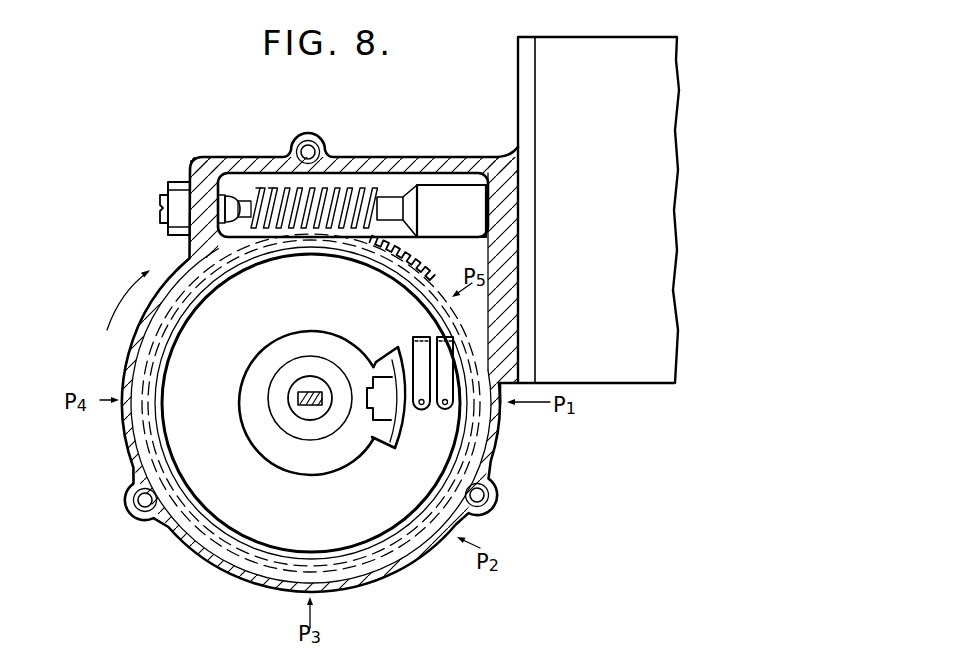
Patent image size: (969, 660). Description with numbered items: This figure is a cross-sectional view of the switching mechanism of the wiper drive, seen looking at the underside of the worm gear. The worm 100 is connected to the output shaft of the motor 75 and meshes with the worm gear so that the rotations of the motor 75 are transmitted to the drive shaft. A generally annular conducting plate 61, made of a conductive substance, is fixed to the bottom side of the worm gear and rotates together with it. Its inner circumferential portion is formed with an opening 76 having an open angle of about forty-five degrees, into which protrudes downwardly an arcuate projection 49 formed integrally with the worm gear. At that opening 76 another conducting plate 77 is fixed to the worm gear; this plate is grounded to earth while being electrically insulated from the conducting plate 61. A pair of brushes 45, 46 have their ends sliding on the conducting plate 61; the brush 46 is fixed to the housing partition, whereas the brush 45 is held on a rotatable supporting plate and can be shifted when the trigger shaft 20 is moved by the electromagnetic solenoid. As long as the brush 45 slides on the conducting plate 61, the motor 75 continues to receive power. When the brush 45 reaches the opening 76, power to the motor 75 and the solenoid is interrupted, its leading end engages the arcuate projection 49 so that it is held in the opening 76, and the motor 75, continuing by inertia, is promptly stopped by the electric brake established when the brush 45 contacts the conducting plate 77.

The worm 100 is at (391, 200).
The motor 75 is at (650, 372).
The trigger shaft 20 is at (305, 405).
The brush 46 is at (446, 410).
The brush 45 is at (468, 516).
The arcuate projection 49 is at (419, 409).
The conducting plate 77 is at (375, 413).
The conducting plate 61 is at (343, 539).
The opening 76 is at (377, 367).